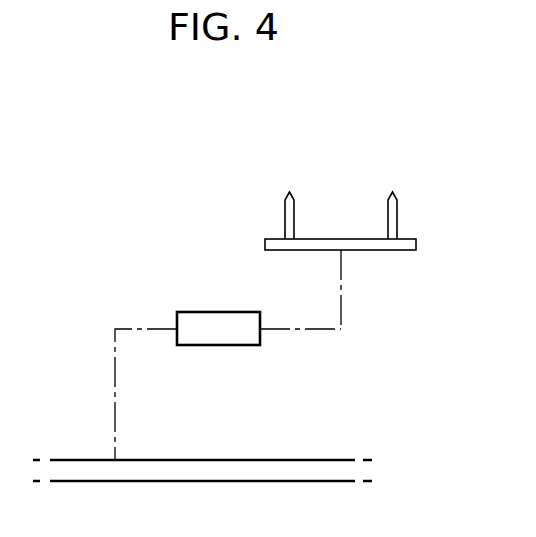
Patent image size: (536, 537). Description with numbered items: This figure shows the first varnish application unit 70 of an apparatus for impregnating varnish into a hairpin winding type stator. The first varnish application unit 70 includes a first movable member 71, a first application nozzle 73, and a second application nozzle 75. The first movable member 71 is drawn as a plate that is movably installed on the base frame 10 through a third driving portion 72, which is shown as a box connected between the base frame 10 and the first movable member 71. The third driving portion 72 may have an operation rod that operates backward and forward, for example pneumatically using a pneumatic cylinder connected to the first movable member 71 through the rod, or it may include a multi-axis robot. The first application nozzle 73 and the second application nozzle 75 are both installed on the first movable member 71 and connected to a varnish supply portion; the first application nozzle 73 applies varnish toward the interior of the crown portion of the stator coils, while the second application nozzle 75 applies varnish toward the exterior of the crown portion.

The base frame 10 is at (80, 460).
The first varnish application unit 70 is at (121, 201).
The first movable member 71 is at (376, 250).
The third driving portion 72 is at (220, 345).
The first application nozzle 73 is at (285, 208).
The second application nozzle 75 is at (397, 212).